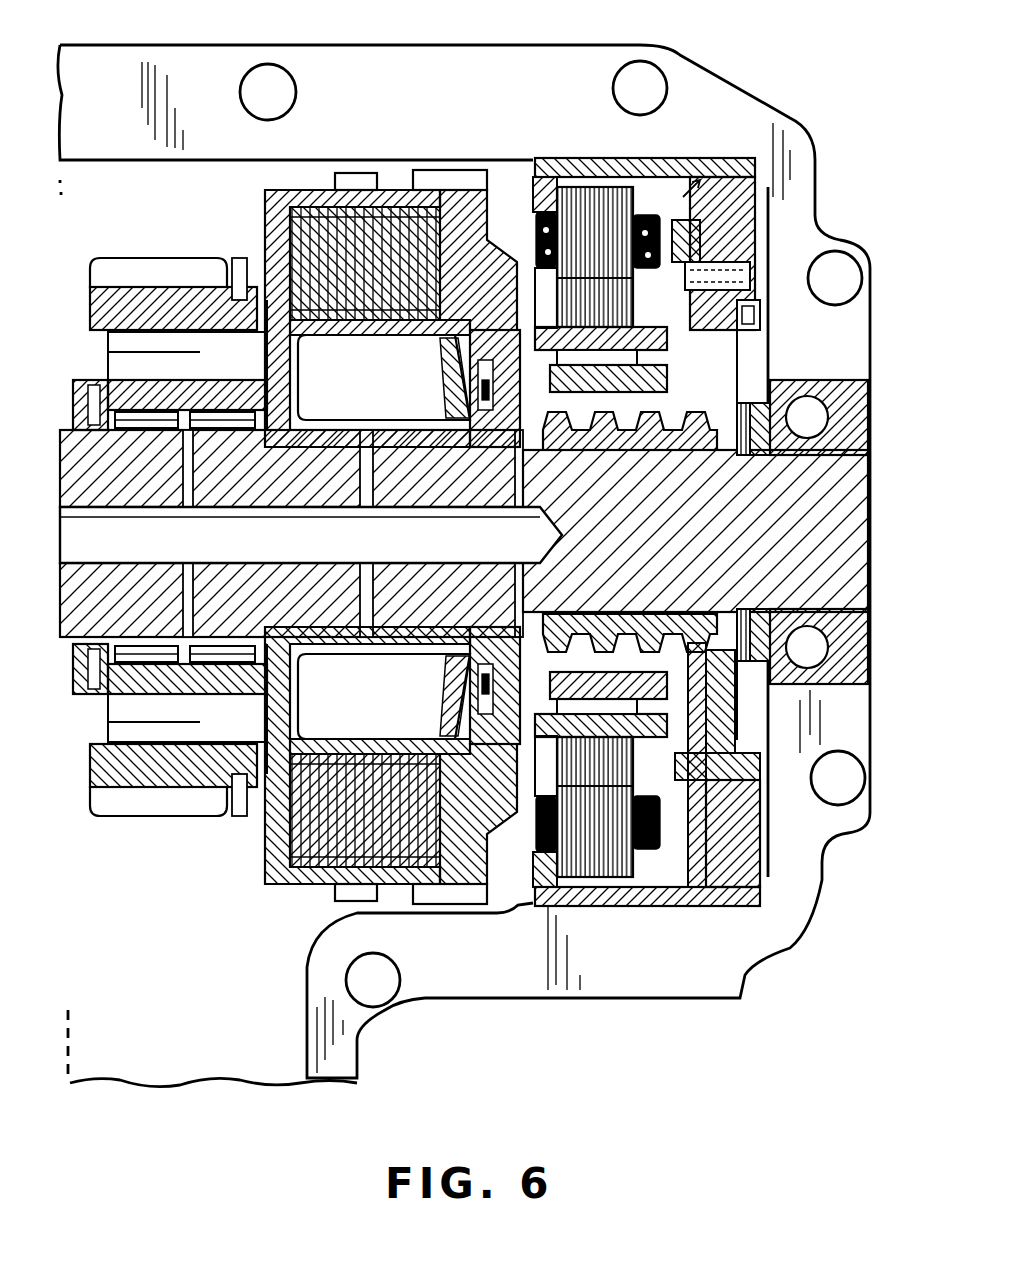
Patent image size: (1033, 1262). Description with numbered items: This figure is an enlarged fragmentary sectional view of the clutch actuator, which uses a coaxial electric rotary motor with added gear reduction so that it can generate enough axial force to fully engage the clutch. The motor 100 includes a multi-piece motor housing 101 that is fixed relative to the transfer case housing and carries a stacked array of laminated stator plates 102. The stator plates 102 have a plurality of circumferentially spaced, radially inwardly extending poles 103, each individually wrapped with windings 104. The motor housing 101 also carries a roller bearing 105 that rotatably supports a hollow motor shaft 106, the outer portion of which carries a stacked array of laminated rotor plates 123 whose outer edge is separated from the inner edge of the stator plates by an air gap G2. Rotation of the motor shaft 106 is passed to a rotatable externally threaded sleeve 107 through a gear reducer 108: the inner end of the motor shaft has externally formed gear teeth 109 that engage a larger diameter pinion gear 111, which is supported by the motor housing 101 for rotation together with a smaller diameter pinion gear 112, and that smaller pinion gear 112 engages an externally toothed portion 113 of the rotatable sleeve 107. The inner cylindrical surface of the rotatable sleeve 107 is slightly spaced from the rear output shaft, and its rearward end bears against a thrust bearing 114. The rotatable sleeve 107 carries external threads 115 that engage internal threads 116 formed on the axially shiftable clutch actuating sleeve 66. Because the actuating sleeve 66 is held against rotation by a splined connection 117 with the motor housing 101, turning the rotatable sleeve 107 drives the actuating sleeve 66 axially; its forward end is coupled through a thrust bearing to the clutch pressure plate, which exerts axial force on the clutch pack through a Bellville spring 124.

The motor 100 is at (718, 162).
The motor housing 101 is at (677, 162).
The laminated stator plates 102 is at (590, 190).
The poles 103 is at (540, 215).
The windings 104 is at (652, 210).
The air gap G2 is at (645, 283).
The externally toothed portion 113 is at (737, 313).
The roller bearing 105 is at (768, 352).
The Bellville spring 124 is at (445, 212).
The splined connection 117 is at (497, 300).
The laminated rotor plates 123 is at (452, 353).
The thrust bearing 114 is at (438, 396).
The clutch actuating sleeve 66 is at (520, 418).
The internal threads 116 is at (512, 432).
The external threads 115 is at (598, 428).
The motor shaft 106 is at (640, 395).
The gear teeth 109 is at (716, 350).
The rotatable sleeve 107 is at (712, 360).
The smaller diameter pinion gear 112 is at (730, 800).
The gear reducer 108 is at (743, 846).
The larger diameter pinion gear 111 is at (688, 835).